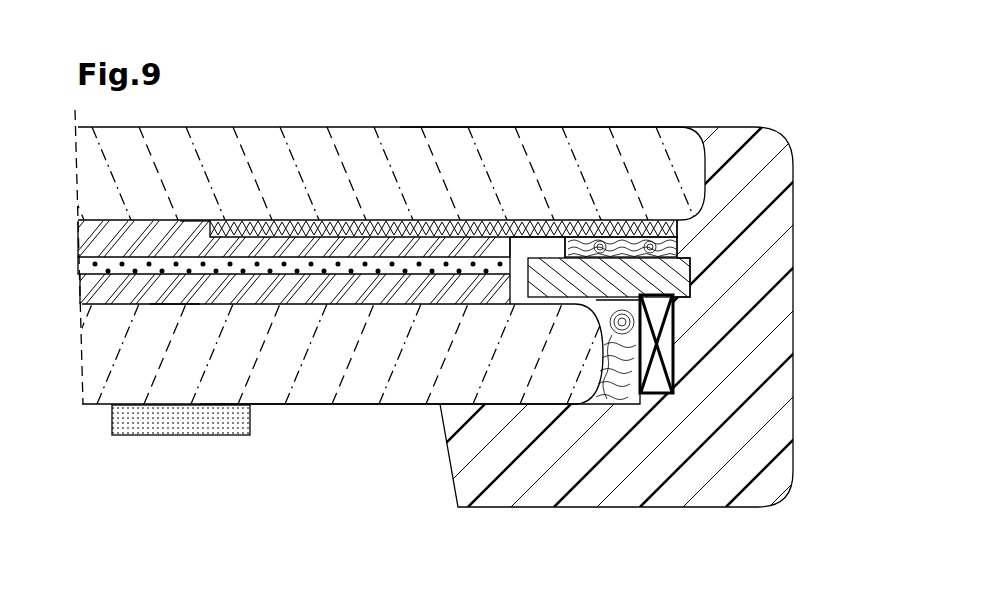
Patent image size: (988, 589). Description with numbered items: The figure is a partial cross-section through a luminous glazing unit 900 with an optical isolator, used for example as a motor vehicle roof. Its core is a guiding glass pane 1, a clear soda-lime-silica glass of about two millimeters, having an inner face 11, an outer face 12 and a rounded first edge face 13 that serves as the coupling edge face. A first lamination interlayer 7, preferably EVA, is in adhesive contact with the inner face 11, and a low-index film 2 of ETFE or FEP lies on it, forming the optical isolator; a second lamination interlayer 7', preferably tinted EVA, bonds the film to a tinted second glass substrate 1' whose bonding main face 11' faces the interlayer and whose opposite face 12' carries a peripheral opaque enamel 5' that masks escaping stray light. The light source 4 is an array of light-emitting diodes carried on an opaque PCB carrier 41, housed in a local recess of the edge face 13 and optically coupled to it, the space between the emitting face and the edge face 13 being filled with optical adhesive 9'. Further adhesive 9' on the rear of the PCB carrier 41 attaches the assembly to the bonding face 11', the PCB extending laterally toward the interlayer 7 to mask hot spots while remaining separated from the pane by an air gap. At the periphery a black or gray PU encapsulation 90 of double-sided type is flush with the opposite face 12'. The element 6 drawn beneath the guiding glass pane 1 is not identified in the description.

The luminous glazing unit 900 is at (624, 83).
The second glass substrate 1' is at (393, 173).
The first glass substrate 1 is at (329, 354).
The opposite face 12' is at (540, 95).
The second main face 12 is at (320, 446).
The peripheral opaque enamel 5' is at (443, 150).
The second lamination interlayer 7' is at (270, 217).
The bonding main face 11' is at (196, 191).
The low-index film 2 is at (80, 270).
The first lamination interlayer 7 is at (290, 313).
The first main face 11 is at (175, 337).
The optical adhesive 9' is at (664, 323).
The first edge face 13 is at (605, 343).
The PCB carrier 41 is at (690, 285).
The light source 4 is at (677, 368).
The coating strip 6 is at (187, 422).
The polymeric encapsulation 90 is at (547, 490).